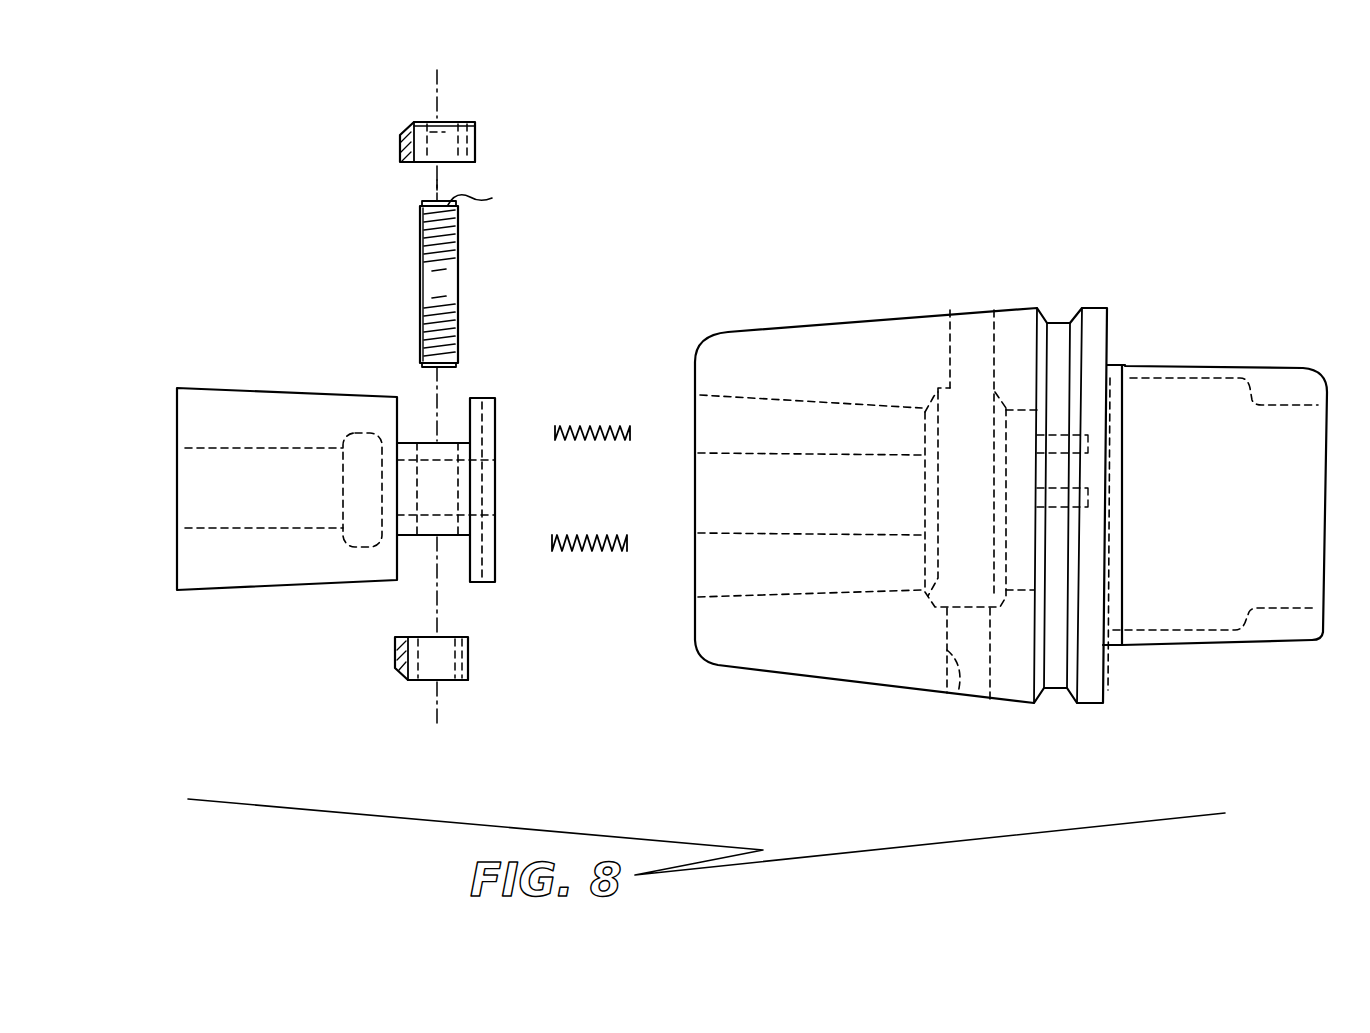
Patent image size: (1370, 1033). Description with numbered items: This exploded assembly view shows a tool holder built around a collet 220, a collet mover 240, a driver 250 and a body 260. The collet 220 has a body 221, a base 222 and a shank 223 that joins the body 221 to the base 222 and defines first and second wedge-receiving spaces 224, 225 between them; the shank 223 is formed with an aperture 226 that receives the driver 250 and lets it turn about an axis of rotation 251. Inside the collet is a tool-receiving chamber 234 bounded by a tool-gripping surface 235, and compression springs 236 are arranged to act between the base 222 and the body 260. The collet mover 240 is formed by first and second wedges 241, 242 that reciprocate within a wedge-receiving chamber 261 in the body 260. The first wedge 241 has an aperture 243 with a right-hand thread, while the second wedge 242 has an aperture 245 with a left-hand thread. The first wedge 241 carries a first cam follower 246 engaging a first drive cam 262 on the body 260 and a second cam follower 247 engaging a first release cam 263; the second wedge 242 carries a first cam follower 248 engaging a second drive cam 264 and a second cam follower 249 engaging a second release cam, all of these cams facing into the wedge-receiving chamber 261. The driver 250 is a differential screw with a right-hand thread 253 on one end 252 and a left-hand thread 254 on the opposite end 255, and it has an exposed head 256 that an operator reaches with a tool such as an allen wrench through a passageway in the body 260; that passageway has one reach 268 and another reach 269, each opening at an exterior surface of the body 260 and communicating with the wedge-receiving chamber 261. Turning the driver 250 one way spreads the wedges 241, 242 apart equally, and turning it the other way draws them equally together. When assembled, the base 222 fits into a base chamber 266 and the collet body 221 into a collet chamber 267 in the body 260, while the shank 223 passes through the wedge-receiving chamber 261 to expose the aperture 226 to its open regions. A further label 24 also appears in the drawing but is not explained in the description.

The bore 24 is at (456, 120).
The collet 220 is at (262, 352).
The collet body 221 is at (208, 590).
The collet base 222 is at (494, 592).
The shank 223 is at (407, 545).
The first wedge-receiving space 224 is at (478, 395).
The second wedge-receiving space 225 is at (455, 572).
The aperture 226 is at (420, 445).
The tool-receiving chamber 234 is at (212, 475).
The tool-gripping surface 235 is at (242, 528).
The compression springs 236 is at (584, 423).
The collet mover 240 is at (510, 117).
The first wedge 241 is at (426, 116).
The second wedge 242 is at (410, 685).
The aperture 243 is at (458, 165).
The aperture 245 is at (450, 690).
The first cam follower 246 is at (402, 130).
The second cam follower 247 is at (478, 141).
The first cam follower 248 is at (398, 673).
The second cam follower 249 is at (468, 660).
The driver 250 is at (482, 253).
The axis of rotation 251 is at (440, 189).
The end 252 is at (420, 204).
The right-hand thread 253 is at (420, 240).
The left-hand thread 254 is at (420, 325).
The opposite end 255 is at (424, 362).
The exposed head 256 is at (456, 364).
The body 260 is at (868, 292).
The wedge-receiving chamber 261 is at (948, 565).
The first drive cam 262 is at (941, 415).
The first release cam 263 is at (1003, 405).
The second drive cam 264 is at (966, 338).
The base chamber 266 is at (1022, 443).
The collet chamber 267 is at (757, 557).
The reach 268 is at (984, 318).
The reach 269 is at (950, 690).